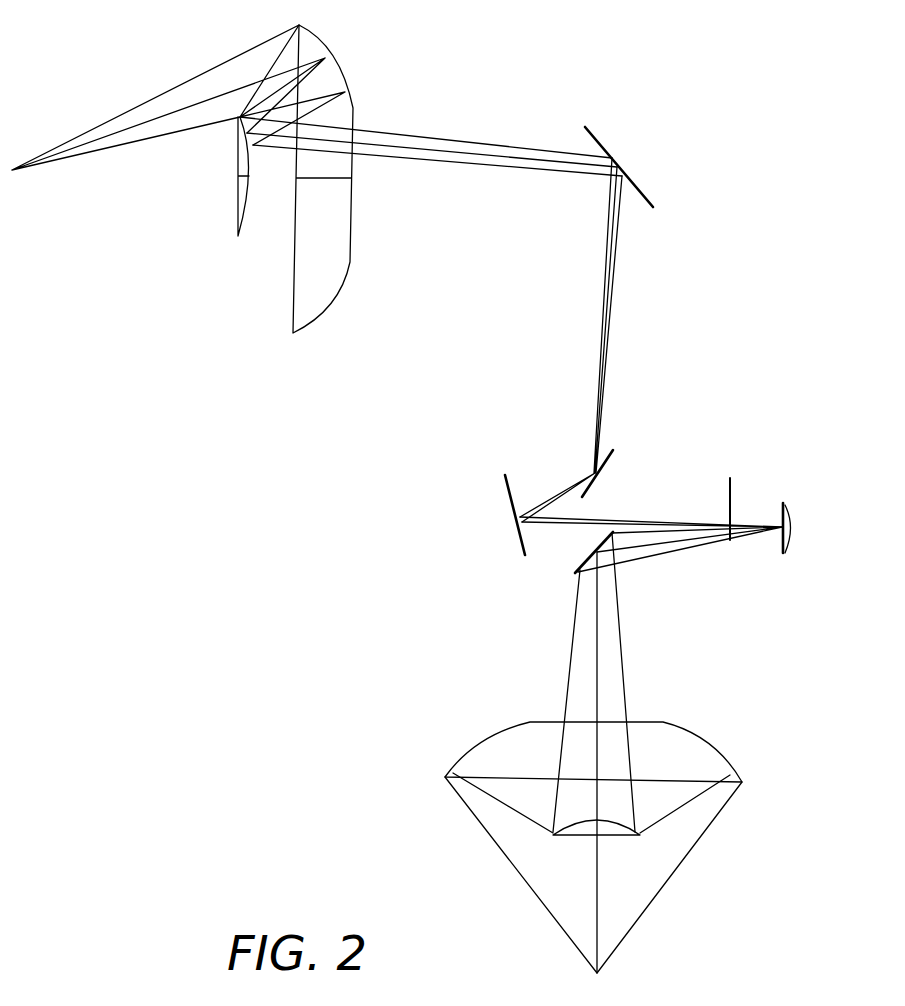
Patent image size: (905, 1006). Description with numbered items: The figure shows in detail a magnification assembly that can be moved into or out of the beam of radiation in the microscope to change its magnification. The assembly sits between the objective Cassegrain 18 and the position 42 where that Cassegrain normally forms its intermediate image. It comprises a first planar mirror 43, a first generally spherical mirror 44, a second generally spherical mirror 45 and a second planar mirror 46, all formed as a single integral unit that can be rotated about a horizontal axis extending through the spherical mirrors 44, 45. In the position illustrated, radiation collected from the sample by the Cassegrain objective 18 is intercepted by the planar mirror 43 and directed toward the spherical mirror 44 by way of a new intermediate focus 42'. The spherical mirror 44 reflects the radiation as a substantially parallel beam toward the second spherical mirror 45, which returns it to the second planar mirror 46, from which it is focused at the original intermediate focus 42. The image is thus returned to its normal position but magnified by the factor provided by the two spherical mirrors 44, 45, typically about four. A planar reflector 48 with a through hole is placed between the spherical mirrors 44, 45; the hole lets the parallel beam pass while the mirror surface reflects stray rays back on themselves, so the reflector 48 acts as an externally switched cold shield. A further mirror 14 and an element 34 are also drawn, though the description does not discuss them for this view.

The mirror 14 is at (643, 197).
The Cassegrain objective 18 is at (663, 723).
The lens assembly 34 is at (277, 296).
The intermediate image position 42 is at (632, 315).
The new intermediate focus 42' is at (680, 569).
The first planar mirror 43 is at (597, 550).
The first spherical mirror 44 is at (790, 510).
The second spherical mirror 45 is at (510, 502).
The second planar mirror 46 is at (608, 458).
The planar reflector 48 is at (735, 487).